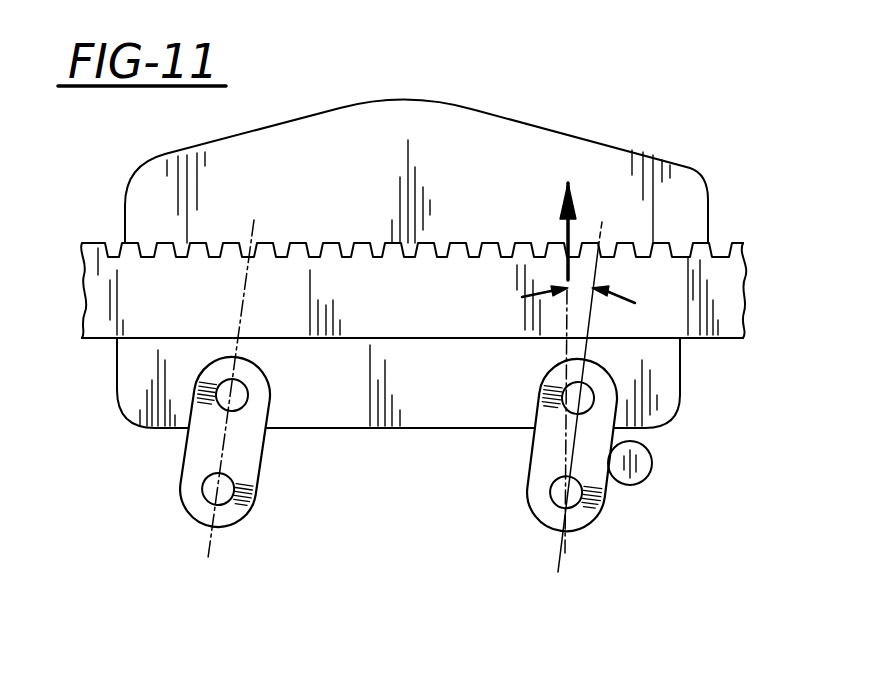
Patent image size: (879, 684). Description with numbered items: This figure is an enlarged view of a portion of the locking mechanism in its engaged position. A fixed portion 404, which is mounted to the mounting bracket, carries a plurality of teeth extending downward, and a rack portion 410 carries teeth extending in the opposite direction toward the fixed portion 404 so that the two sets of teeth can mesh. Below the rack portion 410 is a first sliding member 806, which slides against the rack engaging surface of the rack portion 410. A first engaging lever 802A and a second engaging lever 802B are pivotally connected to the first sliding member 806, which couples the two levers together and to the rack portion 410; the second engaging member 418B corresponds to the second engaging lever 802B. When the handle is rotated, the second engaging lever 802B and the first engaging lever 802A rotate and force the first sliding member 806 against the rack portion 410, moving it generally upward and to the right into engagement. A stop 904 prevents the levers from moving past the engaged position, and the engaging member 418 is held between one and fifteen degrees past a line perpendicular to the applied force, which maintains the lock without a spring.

The fixed portion 404 is at (317, 92).
The rack portion 410 is at (760, 320).
The first sliding member 806 is at (110, 410).
The first engaging lever 802A is at (183, 492).
The second engaging lever 802B is at (605, 527).
The engaging member 418 is at (212, 570).
The second engaging member 418B is at (543, 560).
The stop 904 is at (652, 465).